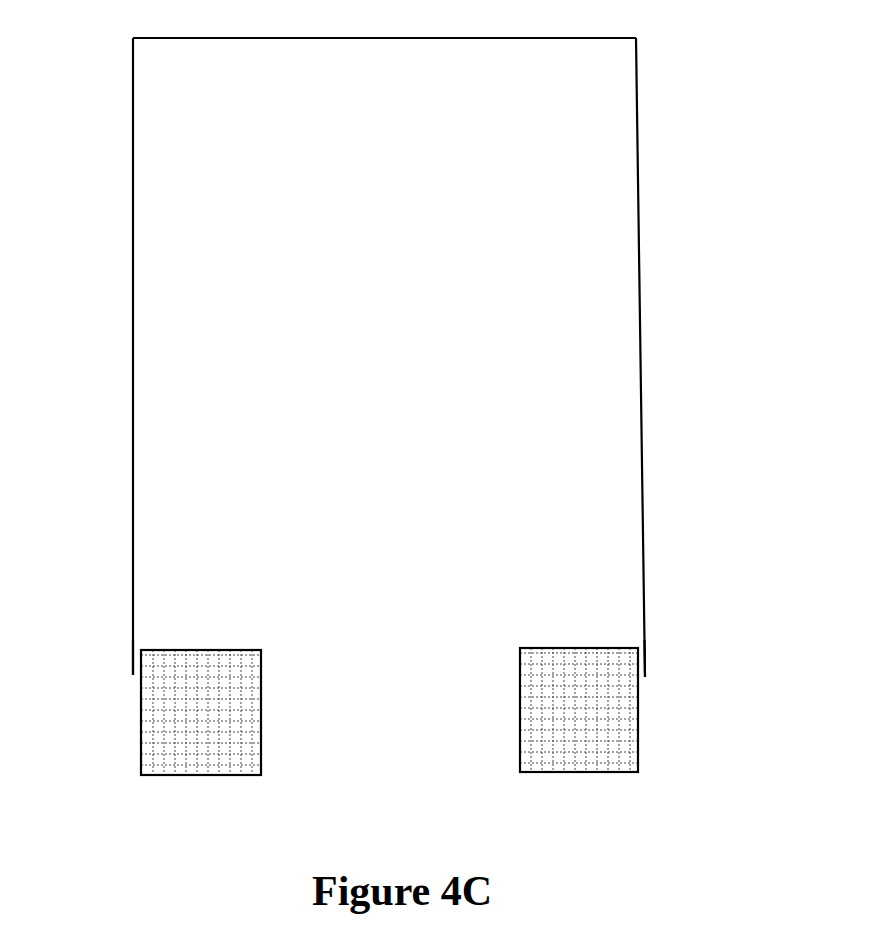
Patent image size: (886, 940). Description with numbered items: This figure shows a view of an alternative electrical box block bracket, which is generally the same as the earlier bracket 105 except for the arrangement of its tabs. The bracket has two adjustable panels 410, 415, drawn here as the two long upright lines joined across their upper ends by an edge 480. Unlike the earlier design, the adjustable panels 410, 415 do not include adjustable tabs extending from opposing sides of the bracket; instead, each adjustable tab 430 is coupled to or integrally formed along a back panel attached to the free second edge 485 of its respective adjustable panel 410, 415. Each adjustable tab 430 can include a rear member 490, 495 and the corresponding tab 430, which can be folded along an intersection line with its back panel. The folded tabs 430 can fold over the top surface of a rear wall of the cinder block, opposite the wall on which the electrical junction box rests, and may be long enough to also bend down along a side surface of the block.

The substrate 105 is at (384, 139).
The top edge of trench 480 is at (132, 38).
The adjustable panel 415 is at (135, 345).
The adjustable panel 410 is at (654, 329).
The free second edge 485 is at (132, 650).
The adjustable tab 430 is at (202, 777).
The rear member 495 is at (205, 646).
The rear member 490 is at (590, 645).